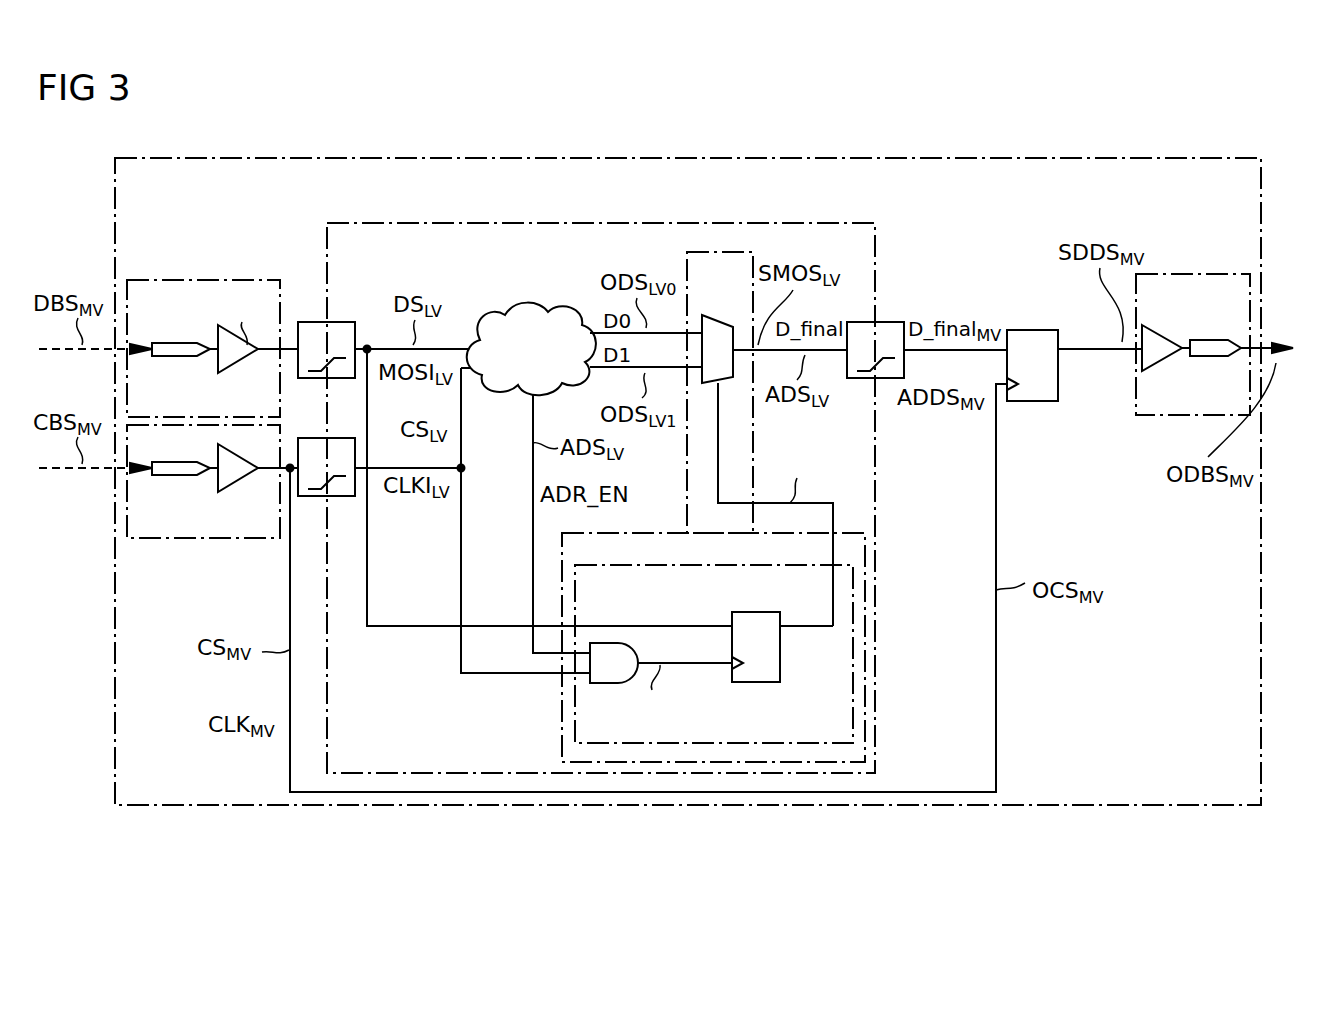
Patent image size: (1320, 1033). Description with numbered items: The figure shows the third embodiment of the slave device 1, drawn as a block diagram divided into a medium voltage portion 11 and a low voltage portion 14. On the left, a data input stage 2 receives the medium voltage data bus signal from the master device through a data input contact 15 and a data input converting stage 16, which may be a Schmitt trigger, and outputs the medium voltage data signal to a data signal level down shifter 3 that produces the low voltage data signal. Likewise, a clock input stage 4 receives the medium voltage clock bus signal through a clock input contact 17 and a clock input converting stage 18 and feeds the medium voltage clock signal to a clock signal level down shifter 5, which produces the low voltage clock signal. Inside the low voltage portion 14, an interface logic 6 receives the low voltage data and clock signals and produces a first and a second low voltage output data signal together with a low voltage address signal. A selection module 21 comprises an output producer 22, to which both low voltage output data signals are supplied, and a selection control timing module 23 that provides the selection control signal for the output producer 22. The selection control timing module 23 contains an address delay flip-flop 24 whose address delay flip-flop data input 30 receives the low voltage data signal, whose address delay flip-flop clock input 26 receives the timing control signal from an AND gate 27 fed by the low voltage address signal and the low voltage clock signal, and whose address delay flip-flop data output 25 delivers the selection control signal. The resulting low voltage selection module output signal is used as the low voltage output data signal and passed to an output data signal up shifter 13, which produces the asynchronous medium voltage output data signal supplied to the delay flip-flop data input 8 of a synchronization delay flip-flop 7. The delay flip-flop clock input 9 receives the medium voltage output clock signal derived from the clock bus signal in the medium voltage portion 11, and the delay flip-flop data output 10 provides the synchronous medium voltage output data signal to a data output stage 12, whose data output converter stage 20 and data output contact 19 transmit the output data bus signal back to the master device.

The slave device 1 is at (1178, 120).
The data input stage 2 is at (218, 280).
The data signal level down shifter 3 is at (352, 322).
The clock input stage 4 is at (208, 540).
The clock signal level down shifter 5 is at (350, 438).
The interface logic 6 is at (513, 307).
The synchronization delay flip-flop 7 is at (1058, 388).
The delay flip-flop data input 8 is at (1007, 352).
The delay flip-flop clock input 9 is at (1002, 388).
The delay flip-flop data output 10 is at (1062, 349).
The medium voltage portion 11 is at (680, 158).
The data output stage 12 is at (1188, 274).
The output data signal up shifter 13 is at (890, 322).
The low voltage portion 14 is at (612, 223).
The data input contact 15 is at (175, 357).
The data input converting stage 16 is at (240, 361).
The clock input contact 17 is at (175, 476).
The clock input converting stage 18 is at (238, 478).
The data output contact 19 is at (1215, 357).
The data output converter stage 20 is at (1168, 333).
The selection module 21 is at (757, 428).
The output producer 22 is at (716, 315).
The selection control timing module 23 is at (733, 565).
The address delay flip-flop 24 is at (753, 682).
The address delay flip-flop data output 25 is at (783, 626).
The address delay flip-flop clock input 26 is at (732, 667).
The AND gate 27 is at (597, 683).
The address delay flip-flop data input 30 is at (727, 626).